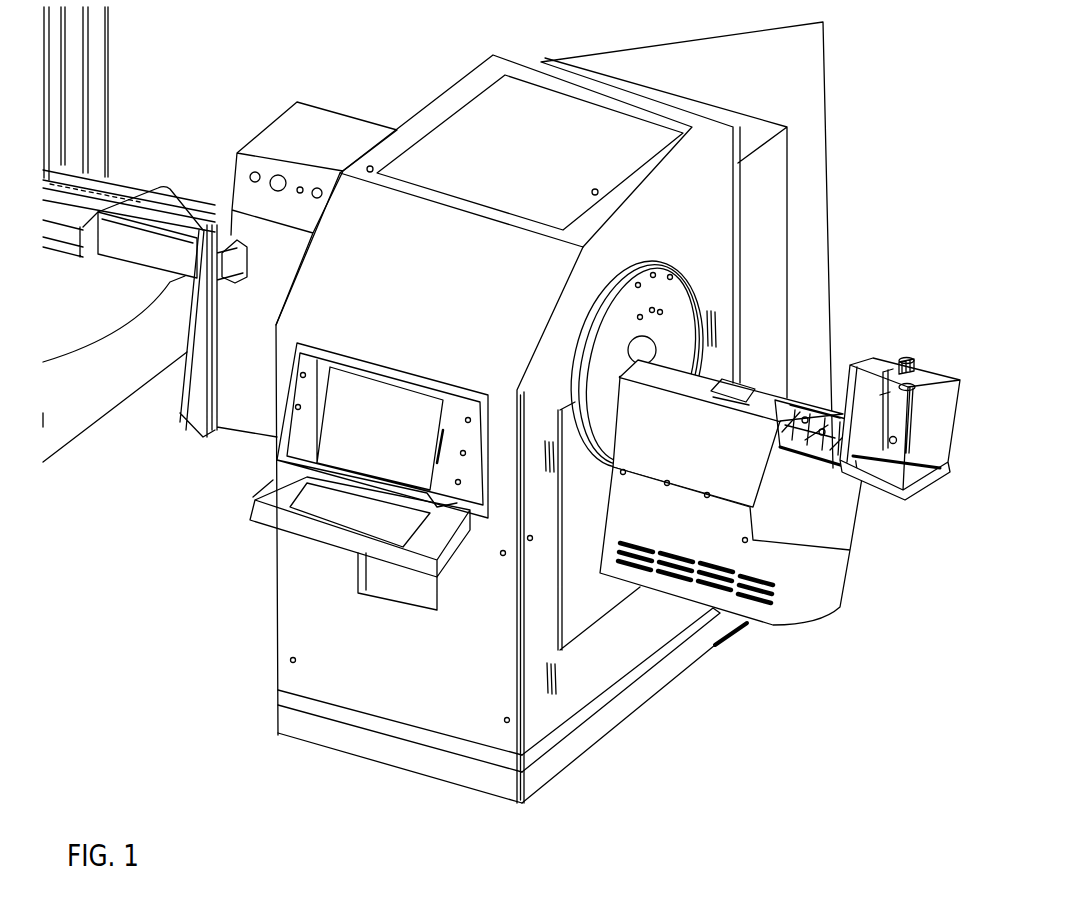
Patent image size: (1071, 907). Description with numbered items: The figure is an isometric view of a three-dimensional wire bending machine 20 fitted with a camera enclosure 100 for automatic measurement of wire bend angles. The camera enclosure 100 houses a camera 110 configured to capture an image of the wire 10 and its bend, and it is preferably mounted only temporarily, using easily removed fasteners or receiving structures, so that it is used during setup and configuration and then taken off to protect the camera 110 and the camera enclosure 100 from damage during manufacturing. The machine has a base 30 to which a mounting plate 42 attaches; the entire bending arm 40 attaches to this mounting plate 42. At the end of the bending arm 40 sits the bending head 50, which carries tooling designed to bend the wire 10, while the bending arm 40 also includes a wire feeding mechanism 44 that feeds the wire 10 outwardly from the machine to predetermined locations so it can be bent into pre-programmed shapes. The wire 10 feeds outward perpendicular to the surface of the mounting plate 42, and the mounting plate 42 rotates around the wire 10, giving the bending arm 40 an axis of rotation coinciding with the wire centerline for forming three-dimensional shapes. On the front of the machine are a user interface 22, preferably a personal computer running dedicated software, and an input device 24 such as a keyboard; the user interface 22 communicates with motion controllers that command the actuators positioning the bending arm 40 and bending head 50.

The wire 10 is at (872, 423).
The wire bending machine 20 is at (262, 793).
The user interface 22 is at (333, 457).
The input device 24 is at (300, 510).
The base 30 is at (292, 622).
The bending arm 40 is at (822, 595).
The mounting plate 42 is at (680, 290).
The wire feeding mechanism 44 is at (743, 387).
The bending head 50 is at (830, 463).
The camera enclosure 100 is at (900, 409).
The camera 110 is at (907, 357).